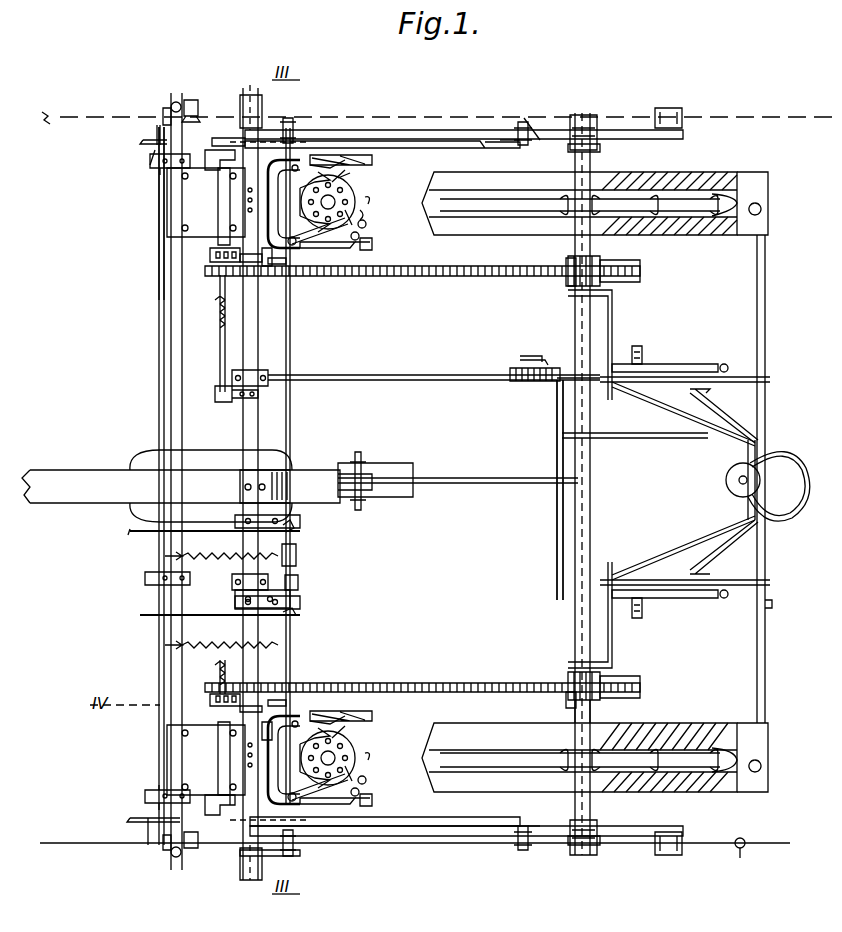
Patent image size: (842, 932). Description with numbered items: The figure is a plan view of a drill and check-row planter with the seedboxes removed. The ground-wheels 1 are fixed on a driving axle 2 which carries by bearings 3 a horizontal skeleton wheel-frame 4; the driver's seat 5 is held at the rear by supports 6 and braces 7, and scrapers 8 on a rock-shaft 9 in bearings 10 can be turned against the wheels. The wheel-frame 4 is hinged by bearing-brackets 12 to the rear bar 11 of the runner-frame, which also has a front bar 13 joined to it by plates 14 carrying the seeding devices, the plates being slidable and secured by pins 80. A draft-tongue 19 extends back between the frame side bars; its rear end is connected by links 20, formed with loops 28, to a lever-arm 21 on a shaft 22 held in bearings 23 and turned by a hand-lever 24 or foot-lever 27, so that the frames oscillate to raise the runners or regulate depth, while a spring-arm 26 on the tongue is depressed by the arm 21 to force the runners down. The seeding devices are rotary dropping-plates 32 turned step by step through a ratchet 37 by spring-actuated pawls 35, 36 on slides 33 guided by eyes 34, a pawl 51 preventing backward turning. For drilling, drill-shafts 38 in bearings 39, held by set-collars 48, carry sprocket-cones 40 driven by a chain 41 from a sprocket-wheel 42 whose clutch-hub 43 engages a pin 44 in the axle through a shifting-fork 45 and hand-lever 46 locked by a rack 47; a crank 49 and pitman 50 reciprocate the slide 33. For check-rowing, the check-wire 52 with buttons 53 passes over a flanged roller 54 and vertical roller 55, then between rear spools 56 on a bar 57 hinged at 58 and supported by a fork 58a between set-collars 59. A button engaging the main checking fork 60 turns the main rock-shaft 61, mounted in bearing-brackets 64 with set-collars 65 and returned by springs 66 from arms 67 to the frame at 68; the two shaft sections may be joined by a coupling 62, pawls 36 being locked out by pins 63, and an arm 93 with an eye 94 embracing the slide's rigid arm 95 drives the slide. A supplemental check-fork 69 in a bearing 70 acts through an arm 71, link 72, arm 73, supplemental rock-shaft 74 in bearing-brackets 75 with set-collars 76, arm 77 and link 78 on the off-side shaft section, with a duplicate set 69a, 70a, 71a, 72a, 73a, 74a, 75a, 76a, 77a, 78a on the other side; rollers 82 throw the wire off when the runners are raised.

The ground-wheels 1 is at (676, 172).
The supporting and driving axle 2 is at (590, 712).
The bearings 3 is at (590, 390).
The wheel-frame 4 is at (466, 380).
The driver's seat 5 is at (790, 452).
The supports 6 is at (722, 398).
The braces 7 is at (685, 410).
The scrapers 8 is at (768, 183).
The rock-shaft 9 is at (765, 667).
The bearings 10 is at (770, 379).
The rear bar 11 is at (250, 325).
The bearing-brackets 12 is at (258, 372).
The front bar 13 is at (171, 416).
The plates 14 is at (206, 481).
The draft-tongue 19 is at (157, 486).
The links 20 is at (372, 466).
The lever-arm 21 is at (490, 478).
The shaft 22 is at (564, 489).
The bearings 23 is at (557, 590).
The hand-lever 24 is at (550, 362).
The spring-arm 26 is at (320, 470).
The foot-lever 27 is at (635, 447).
The loops 28 is at (361, 458).
The rotary dropping-plates 32 is at (350, 192).
The slides 33 is at (340, 248).
The eyes 34 is at (372, 248).
The spring-actuated pawl 35 is at (300, 244).
The spring-actuated pawl 36 is at (345, 162).
The ratchet 37 is at (359, 236).
The drill-shafts 38 is at (220, 345).
The bearings 39 is at (215, 393).
The sprocket-cone 40 is at (210, 256).
The driving-chain 41 is at (422, 479).
The sprocket-wheel 42 is at (640, 272).
The clutch-hub 43 is at (600, 262).
The pin 44 is at (570, 258).
The shifting-fork 45 is at (612, 340).
The hand-lever 46 is at (700, 364).
The rack 47 is at (642, 352).
The set-collars 48 is at (213, 792).
The crank 49 is at (205, 868).
The pitman 50 is at (240, 144).
The spring-actuated pawl 51 is at (366, 224).
The check-wire 52 is at (82, 117).
The buttons 53 is at (387, 481).
The roller 54 is at (196, 106).
The vertical roller 55 is at (172, 103).
The rear guiding rollers 56 is at (668, 481).
The bar 57 is at (442, 130).
The hinge 58 is at (262, 110).
The fork 58a is at (597, 118).
The set-collars 59 is at (600, 148).
The main checking fork 60 is at (293, 118).
The main rock-shaft 61 is at (290, 300).
The coupling 62 is at (296, 552).
The pins 63 is at (372, 160).
The bearing-brackets 64 is at (302, 592).
The set-collars 65 is at (300, 612).
The springs 66 is at (215, 553).
The arm 67 is at (294, 526).
The runner-frame attachment point 68 is at (165, 553).
The supplemental check-fork 69 is at (518, 845).
The supplemental check-fork 69a is at (524, 120).
The bearing 70 is at (530, 826).
The bearing 70a is at (530, 125).
The arm 71 is at (518, 826).
The arm 71a is at (520, 142).
The reciprocating link 72 is at (458, 814).
The reciprocating link 72a is at (490, 150).
The arm 73 is at (148, 825).
The arm 73a is at (150, 140).
The supplemental rock-shaft 74 is at (159, 760).
The supplemental rock-shaft 74a is at (159, 242).
The bearing-brackets 75 is at (145, 578).
The bearing-brackets 75a is at (150, 160).
The set-collars 76 is at (159, 787).
The set-collars 76a is at (155, 170).
The arm 77 is at (130, 533).
The arm 77a is at (140, 616).
The link 78 is at (235, 518).
The link 78a is at (235, 604).
The pins 80 is at (250, 200).
The rollers 82 is at (163, 108).
The arm 93 is at (275, 264).
The eye 94 is at (251, 487).
The transverse rigid arm 95 is at (258, 491).